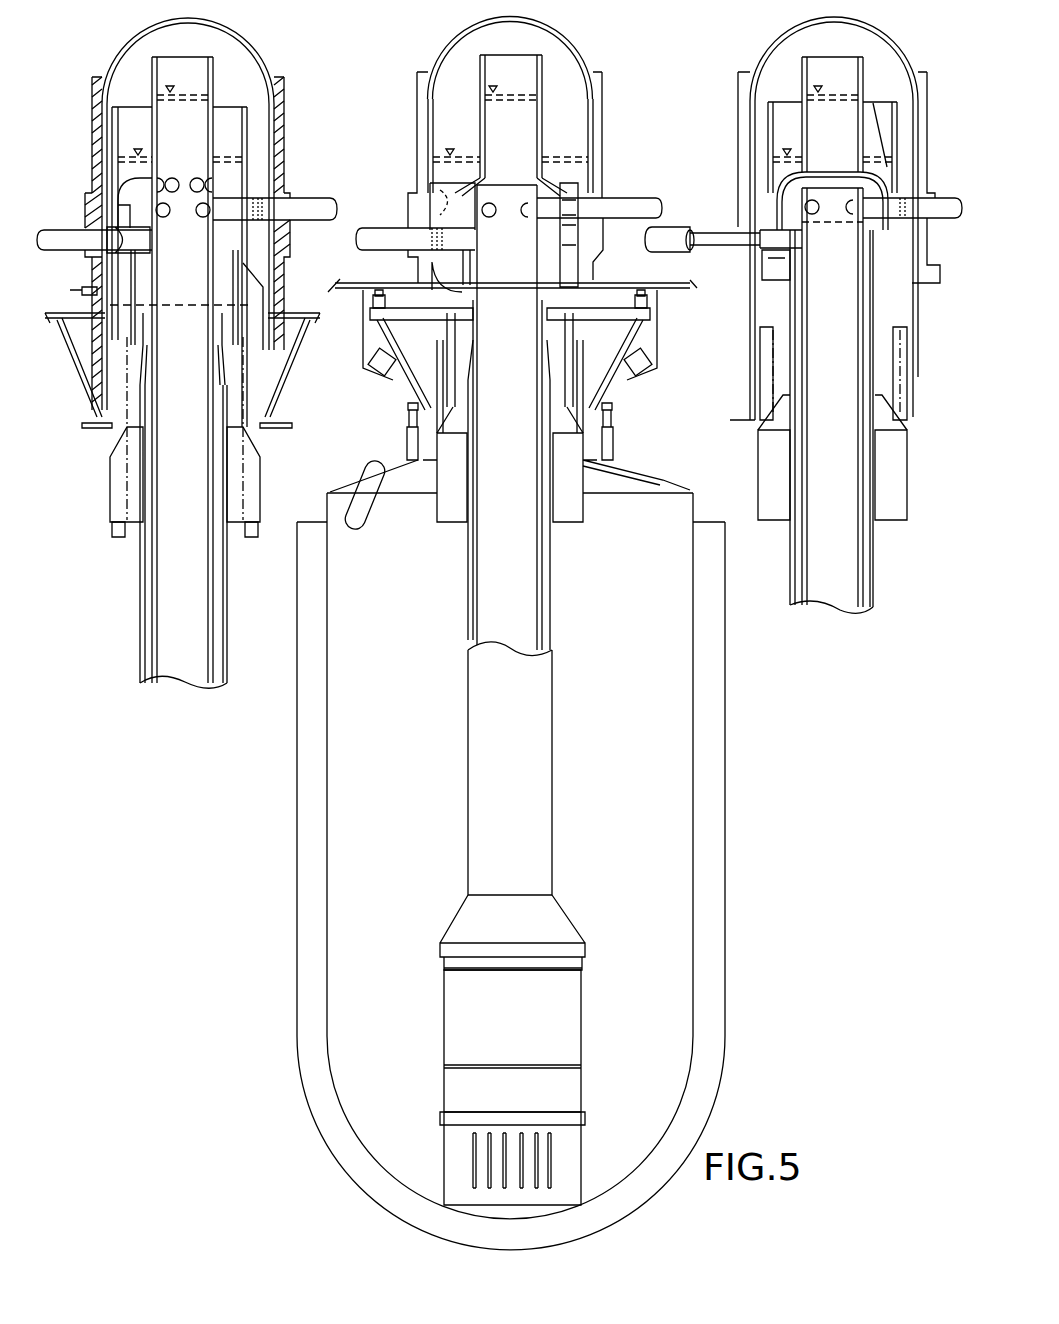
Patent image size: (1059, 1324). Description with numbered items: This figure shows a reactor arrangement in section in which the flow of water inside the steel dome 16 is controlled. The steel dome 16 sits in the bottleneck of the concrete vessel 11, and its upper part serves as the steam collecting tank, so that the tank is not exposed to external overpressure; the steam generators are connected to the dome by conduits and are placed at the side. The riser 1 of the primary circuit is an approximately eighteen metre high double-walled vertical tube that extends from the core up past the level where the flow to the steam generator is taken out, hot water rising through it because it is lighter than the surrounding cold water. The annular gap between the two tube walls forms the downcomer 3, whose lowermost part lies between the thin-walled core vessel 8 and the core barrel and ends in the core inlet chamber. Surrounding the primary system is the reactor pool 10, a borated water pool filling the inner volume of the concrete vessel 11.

The riser 1 is at (528, 557).
The downcomer 3 is at (545, 619).
The core vessel 8 is at (551, 759).
The reactor pool 10 is at (510, 856).
The concrete vessel 11 is at (543, 886).
The steel dome 16 is at (241, 42).